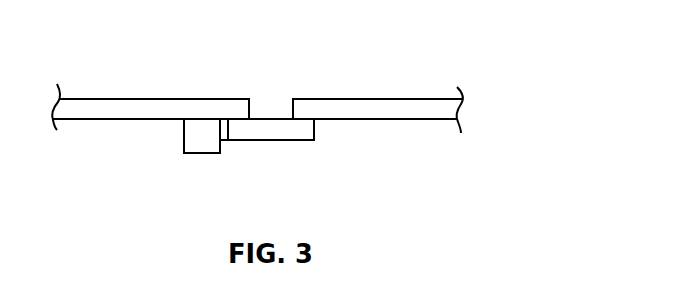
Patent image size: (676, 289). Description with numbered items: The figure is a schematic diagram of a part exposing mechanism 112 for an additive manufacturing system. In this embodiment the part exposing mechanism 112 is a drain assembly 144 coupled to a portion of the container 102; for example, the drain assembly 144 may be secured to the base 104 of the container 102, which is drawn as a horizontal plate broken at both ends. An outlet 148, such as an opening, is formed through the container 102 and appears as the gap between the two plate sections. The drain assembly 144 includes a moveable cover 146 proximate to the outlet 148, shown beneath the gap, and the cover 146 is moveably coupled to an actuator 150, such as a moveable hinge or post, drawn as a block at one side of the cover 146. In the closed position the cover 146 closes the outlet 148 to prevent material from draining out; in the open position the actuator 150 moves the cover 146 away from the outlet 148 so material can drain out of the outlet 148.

The container 102 is at (257, 69).
The base 104 is at (333, 98).
The part exposing mechanism 112 is at (191, 179).
The drain assembly 144 is at (311, 164).
The moveable cover 146 is at (272, 140).
The outlet 148 is at (272, 118).
The actuator 150 is at (184, 137).